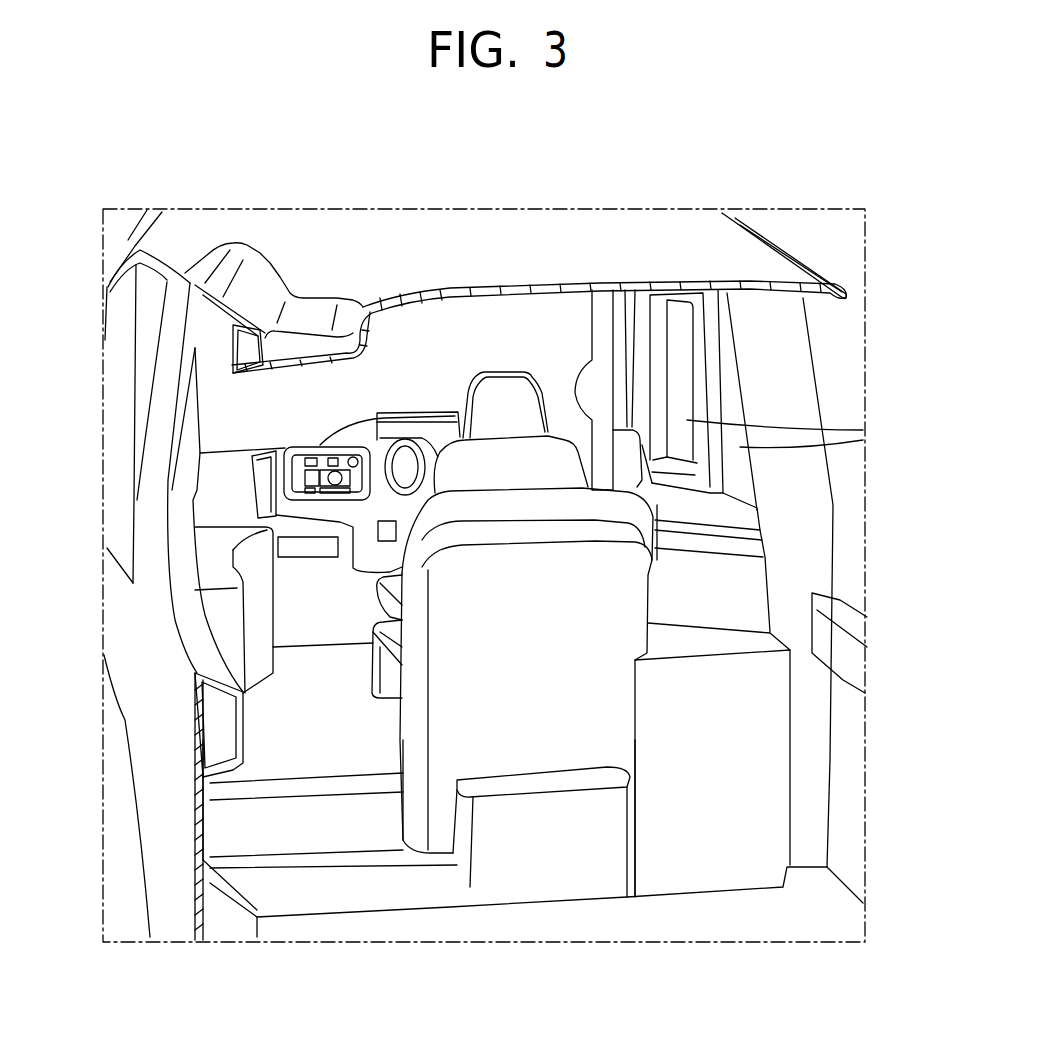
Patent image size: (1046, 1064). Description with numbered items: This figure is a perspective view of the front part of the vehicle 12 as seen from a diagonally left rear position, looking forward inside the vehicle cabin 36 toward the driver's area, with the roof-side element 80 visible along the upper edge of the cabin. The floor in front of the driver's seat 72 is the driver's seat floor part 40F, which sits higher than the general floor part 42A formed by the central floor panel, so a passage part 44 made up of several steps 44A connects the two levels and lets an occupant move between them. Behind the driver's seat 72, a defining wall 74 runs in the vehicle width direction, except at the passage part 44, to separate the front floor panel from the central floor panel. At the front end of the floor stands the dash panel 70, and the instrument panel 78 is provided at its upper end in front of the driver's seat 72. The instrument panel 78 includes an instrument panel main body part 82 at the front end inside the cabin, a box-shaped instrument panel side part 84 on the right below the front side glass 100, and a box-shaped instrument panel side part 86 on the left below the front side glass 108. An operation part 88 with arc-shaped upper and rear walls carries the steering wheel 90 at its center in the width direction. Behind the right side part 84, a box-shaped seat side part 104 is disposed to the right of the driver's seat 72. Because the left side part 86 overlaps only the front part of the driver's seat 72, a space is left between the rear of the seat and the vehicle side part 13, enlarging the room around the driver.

The vehicle 12 is at (848, 263).
The vehicle side part 13 is at (855, 578).
The vehicle cabin 36 is at (543, 348).
The driver's seat floor part 40F is at (280, 704).
The general floor part 42A is at (583, 923).
The passage part 44 is at (330, 882).
The steps 44A is at (318, 790).
The dash panel 70 is at (296, 583).
The driver's seat 72 is at (483, 463).
The defining wall 74 is at (540, 738).
The instrument panel 78 is at (218, 452).
The roof header 80 is at (387, 342).
The instrument panel main body part 82 is at (237, 485).
The instrument panel side part 84 is at (767, 516).
The instrument panel side part 86 is at (188, 561).
The operation part 88 is at (397, 413).
The steering wheel 90 is at (392, 440).
The front side glass 100 is at (690, 420).
The seat side part 104 is at (798, 710).
The front side glass 108 is at (132, 405).